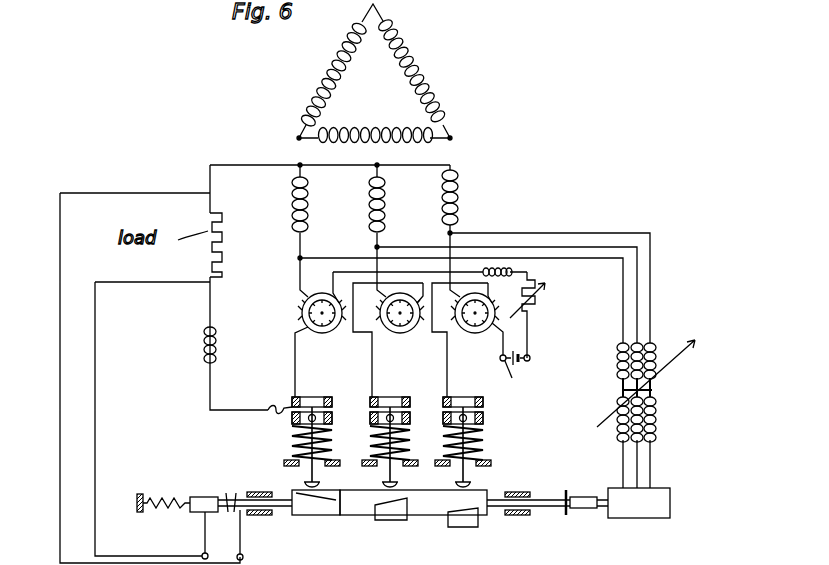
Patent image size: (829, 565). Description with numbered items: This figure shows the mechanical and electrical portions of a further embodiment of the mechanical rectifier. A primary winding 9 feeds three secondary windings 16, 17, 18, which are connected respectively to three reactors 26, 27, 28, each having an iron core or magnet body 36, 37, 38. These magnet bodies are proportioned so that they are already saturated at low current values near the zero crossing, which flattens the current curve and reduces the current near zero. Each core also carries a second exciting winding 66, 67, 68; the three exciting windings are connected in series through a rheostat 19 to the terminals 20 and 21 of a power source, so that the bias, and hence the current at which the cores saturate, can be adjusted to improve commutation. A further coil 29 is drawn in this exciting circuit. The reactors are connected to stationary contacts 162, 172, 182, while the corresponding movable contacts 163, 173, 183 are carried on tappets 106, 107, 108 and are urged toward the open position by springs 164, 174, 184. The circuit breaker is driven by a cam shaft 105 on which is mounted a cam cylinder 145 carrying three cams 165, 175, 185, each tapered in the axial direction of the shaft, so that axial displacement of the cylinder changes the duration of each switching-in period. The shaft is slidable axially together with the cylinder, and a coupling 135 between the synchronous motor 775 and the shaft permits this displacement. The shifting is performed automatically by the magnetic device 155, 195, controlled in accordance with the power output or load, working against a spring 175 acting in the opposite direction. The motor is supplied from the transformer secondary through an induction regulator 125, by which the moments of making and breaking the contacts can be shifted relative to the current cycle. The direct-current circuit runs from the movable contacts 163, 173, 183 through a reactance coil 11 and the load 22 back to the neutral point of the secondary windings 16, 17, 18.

The primary winding 9 is at (404, 93).
The reactance coil 11 is at (222, 347).
The secondary winding 16 is at (308, 202).
The secondary winding 17 is at (385, 202).
The secondary winding 18 is at (459, 196).
The rheostat 19 is at (536, 312).
The terminal 20 is at (531, 358).
The terminal 21 is at (512, 379).
The load 22 is at (223, 231).
The reactor 26 is at (302, 313).
The reactor 27 is at (385, 310).
The reactor 28 is at (457, 310).
The coil 29 is at (518, 269).
The magnet body 36 is at (322, 333).
The magnet body 37 is at (400, 333).
The magnet body 38 is at (475, 333).
The exciting winding 66 is at (339, 323).
The exciting winding 67 is at (417, 323).
The exciting winding 68 is at (494, 335).
The cam shaft 105 is at (538, 500).
The tappet 106 is at (286, 463).
The tappet 107 is at (404, 482).
The tappet 108 is at (478, 482).
The induction regulator 125 is at (628, 380).
The coupling 135 is at (576, 497).
The cam cylinder 145 is at (356, 515).
The magnetic device 155 is at (203, 497).
The stationary contact 162 is at (322, 392).
The movable contact 163 is at (346, 420).
The spring 164 is at (292, 436).
The cam 165 is at (320, 515).
The stationary contact 172 is at (400, 392).
The movable contact 173 is at (370, 420).
The spring 174 is at (404, 444).
The cam 175 is at (170, 500).
The stationary contact 182 is at (483, 402).
The movable contact 183 is at (443, 421).
The spring 184 is at (483, 446).
The cam 185 is at (480, 521).
The magnetic device 195 is at (233, 500).
The drive motor 775 is at (645, 510).